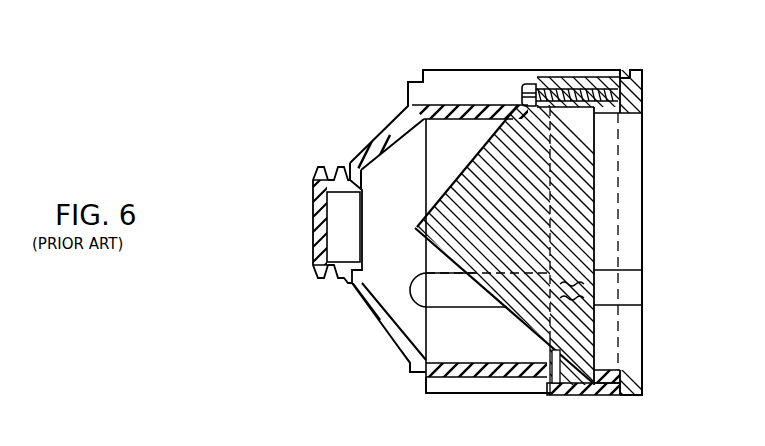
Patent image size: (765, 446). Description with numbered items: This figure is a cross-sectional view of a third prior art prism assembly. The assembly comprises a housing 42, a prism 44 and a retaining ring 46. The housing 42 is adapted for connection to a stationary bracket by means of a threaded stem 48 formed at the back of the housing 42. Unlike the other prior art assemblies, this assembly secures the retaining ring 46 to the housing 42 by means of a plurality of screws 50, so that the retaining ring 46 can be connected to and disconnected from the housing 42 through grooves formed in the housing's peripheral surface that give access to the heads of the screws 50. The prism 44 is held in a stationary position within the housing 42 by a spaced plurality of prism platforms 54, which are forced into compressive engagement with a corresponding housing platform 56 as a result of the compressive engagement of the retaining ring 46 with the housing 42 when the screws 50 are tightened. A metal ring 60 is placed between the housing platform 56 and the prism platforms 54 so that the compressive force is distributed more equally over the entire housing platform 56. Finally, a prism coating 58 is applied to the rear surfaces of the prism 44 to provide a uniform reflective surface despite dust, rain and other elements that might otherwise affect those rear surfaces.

The housing 42 is at (460, 88).
The prism 44 is at (596, 212).
The retaining ring 46 is at (640, 95).
The threaded stem 48 is at (317, 173).
The screws 50 is at (530, 87).
The prism platforms 54 is at (520, 105).
The housing platform 56 is at (547, 374).
The prism coating 58 is at (507, 313).
The metal ring 60 is at (553, 380).